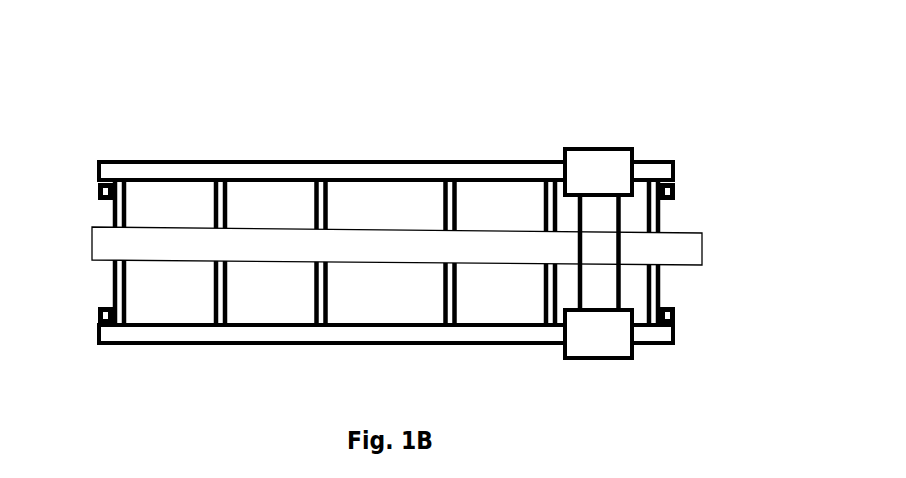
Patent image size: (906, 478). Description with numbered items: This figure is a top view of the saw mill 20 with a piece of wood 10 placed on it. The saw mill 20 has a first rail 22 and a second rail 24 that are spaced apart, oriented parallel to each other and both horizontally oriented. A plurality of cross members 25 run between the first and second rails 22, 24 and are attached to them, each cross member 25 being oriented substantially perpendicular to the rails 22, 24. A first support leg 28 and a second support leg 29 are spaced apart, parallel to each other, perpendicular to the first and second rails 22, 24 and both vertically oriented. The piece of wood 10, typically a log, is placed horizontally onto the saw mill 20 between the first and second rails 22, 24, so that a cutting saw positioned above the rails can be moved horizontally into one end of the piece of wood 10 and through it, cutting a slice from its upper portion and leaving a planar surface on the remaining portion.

The piece of wood 10 is at (692, 245).
The saw mill 20 is at (417, 214).
The first rail 22 is at (150, 335).
The second rail 24 is at (162, 168).
The cross members 25 is at (121, 190).
The first support leg 28 is at (610, 158).
The second support leg 29 is at (675, 185).